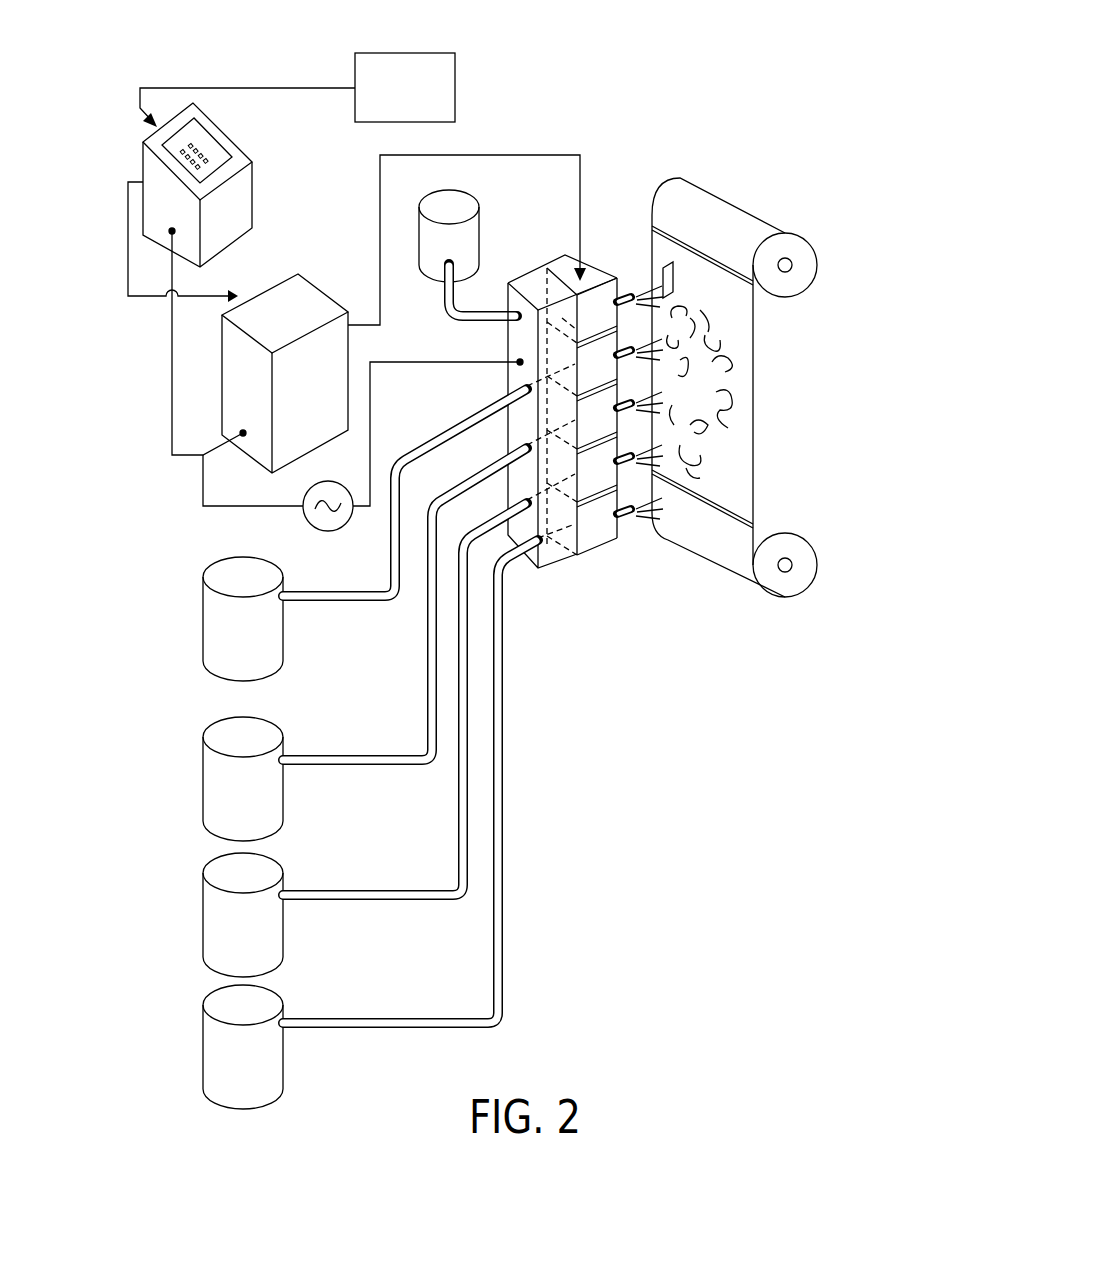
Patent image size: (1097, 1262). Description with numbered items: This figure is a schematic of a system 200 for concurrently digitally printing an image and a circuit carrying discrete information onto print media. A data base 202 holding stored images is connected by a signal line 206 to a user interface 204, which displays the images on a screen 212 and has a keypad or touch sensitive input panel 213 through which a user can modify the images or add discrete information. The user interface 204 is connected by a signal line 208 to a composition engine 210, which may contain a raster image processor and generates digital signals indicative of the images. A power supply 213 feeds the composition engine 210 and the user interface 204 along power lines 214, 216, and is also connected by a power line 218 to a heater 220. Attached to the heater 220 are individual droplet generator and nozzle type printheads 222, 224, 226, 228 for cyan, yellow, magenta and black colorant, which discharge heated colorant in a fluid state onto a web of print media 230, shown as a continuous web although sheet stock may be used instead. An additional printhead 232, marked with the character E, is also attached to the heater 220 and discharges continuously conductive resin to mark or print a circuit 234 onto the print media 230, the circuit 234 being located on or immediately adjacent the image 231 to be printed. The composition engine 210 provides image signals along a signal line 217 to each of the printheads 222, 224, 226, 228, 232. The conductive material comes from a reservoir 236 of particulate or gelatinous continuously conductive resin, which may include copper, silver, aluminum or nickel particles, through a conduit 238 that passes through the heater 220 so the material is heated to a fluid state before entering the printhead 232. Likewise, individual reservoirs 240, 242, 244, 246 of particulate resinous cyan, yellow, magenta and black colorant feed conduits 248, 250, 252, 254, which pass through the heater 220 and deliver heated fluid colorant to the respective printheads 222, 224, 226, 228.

The system 200 is at (657, 96).
The data base 202 is at (398, 54).
The user interface 204 is at (252, 197).
The signal line 206 is at (257, 88).
The signal line 208 is at (137, 298).
The composition engine 210 is at (267, 290).
The screen 212 is at (203, 127).
The input panel / power supply 213 is at (207, 161).
The power line 214 is at (223, 508).
The power line 216 is at (172, 403).
The signal line 217 is at (485, 153).
The power line 218 is at (405, 362).
The heater 220 is at (555, 563).
The cyan printhead 222 is at (653, 326).
The yellow printhead 224 is at (562, 407).
The magenta printhead 226 is at (623, 470).
The black printhead 228 is at (618, 530).
The web of print media 230 is at (755, 325).
The image 231 is at (740, 380).
The additional printhead 232 is at (600, 268).
The circuit 234 is at (668, 264).
The reservoir 236 is at (480, 232).
The conduit 238 is at (488, 313).
The cyan colorant reservoir 240 is at (203, 622).
The yellow colorant reservoir 242 is at (203, 782).
The magenta colorant reservoir 244 is at (203, 918).
The black colorant reservoir 246 is at (203, 1050).
The conduit 248 is at (320, 601).
The conduit 250 is at (337, 767).
The conduit 252 is at (337, 900).
The conduit 254 is at (338, 1030).